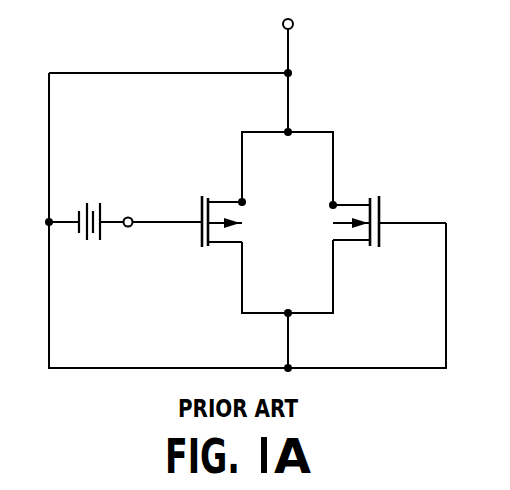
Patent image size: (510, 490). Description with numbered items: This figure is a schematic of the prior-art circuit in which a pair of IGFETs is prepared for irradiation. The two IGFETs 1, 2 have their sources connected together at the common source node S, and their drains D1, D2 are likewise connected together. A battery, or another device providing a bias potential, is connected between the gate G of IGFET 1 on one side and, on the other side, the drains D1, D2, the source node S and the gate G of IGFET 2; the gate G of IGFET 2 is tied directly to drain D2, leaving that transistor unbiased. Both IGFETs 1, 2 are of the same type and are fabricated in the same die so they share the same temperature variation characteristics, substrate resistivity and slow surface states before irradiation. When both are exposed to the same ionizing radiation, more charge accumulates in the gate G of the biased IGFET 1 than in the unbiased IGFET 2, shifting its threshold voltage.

The IGFET 1 is at (228, 200).
The IGFET 2 is at (353, 204).
The source connection S is at (300, 75).
The gate G is at (289, 241).
The drain D1 is at (247, 314).
The drain D2 is at (330, 314).